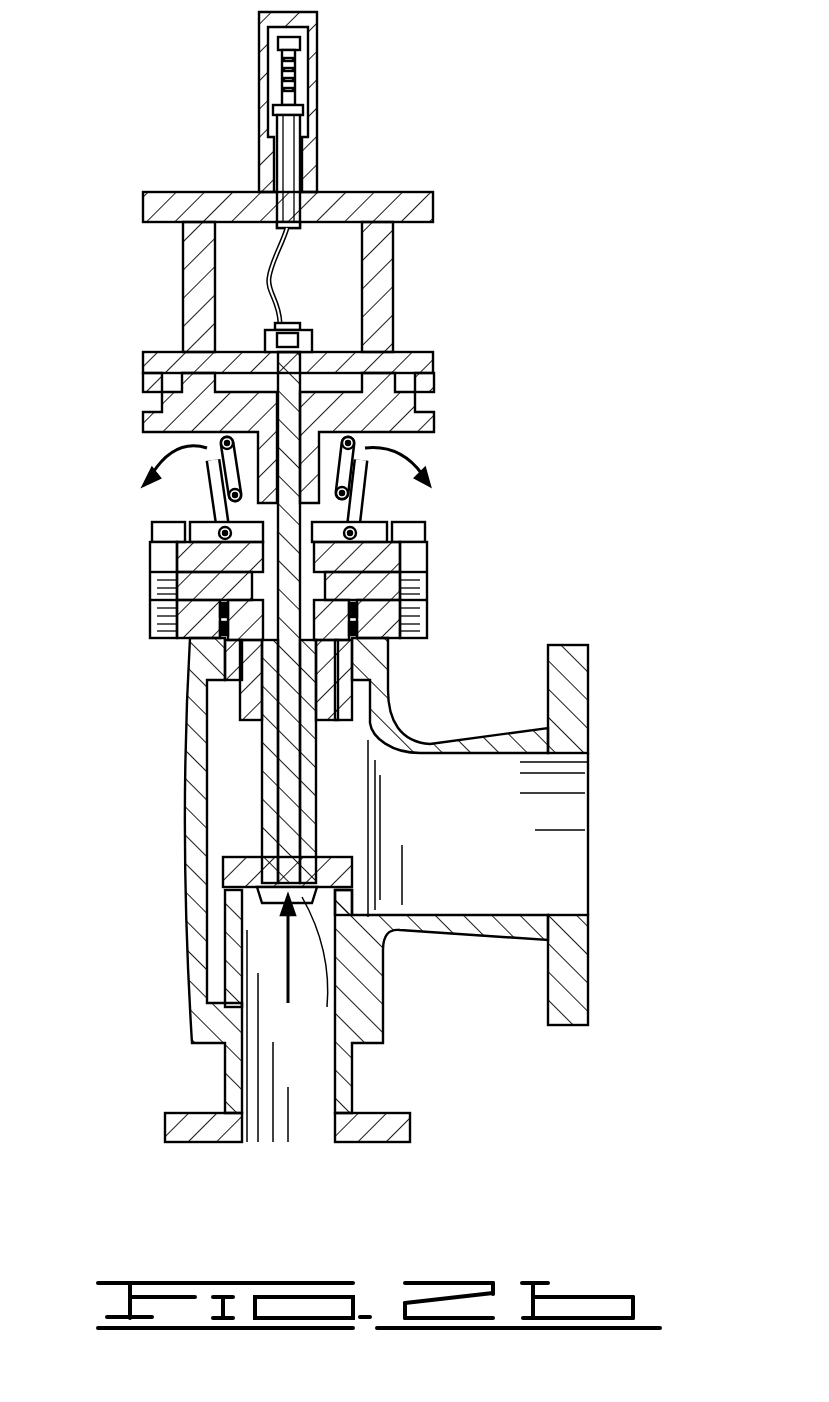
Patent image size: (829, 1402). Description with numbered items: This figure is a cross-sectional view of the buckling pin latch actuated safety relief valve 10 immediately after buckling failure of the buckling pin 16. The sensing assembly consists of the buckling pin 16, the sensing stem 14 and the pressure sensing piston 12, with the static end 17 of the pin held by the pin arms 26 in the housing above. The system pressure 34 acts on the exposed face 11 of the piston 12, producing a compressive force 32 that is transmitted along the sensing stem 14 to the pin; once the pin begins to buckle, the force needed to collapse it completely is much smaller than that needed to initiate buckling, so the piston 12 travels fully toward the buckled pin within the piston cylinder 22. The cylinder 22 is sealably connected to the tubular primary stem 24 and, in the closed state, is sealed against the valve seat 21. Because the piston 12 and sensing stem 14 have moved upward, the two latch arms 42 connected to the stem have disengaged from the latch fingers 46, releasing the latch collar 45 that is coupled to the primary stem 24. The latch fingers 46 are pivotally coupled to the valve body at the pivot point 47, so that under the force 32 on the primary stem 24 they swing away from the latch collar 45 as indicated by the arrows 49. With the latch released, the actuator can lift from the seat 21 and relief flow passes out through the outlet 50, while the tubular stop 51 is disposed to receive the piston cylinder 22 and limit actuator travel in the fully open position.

The safety relief valve 10 is at (524, 359).
The exposed face 11 is at (357, 1045).
The pressure sensing piston 12 is at (257, 897).
The sensing stem 14 is at (287, 758).
The buckling pin 16 is at (270, 288).
The static end 17 is at (306, 238).
The valve seat 21 is at (343, 915).
The piston cylinder 22 is at (225, 872).
The primary stem 24 is at (263, 743).
The pin arms 26 is at (193, 290).
The compressive force 32 is at (287, 973).
The system pressure 34 is at (327, 1040).
The latch arms 42 is at (163, 433).
The latch collar 45 is at (330, 517).
The latch fingers 46 is at (207, 487).
The pivot point 47 is at (380, 543).
The arrows 49 is at (157, 458).
The outlet 50 is at (588, 812).
The tubular stop 51 is at (340, 708).